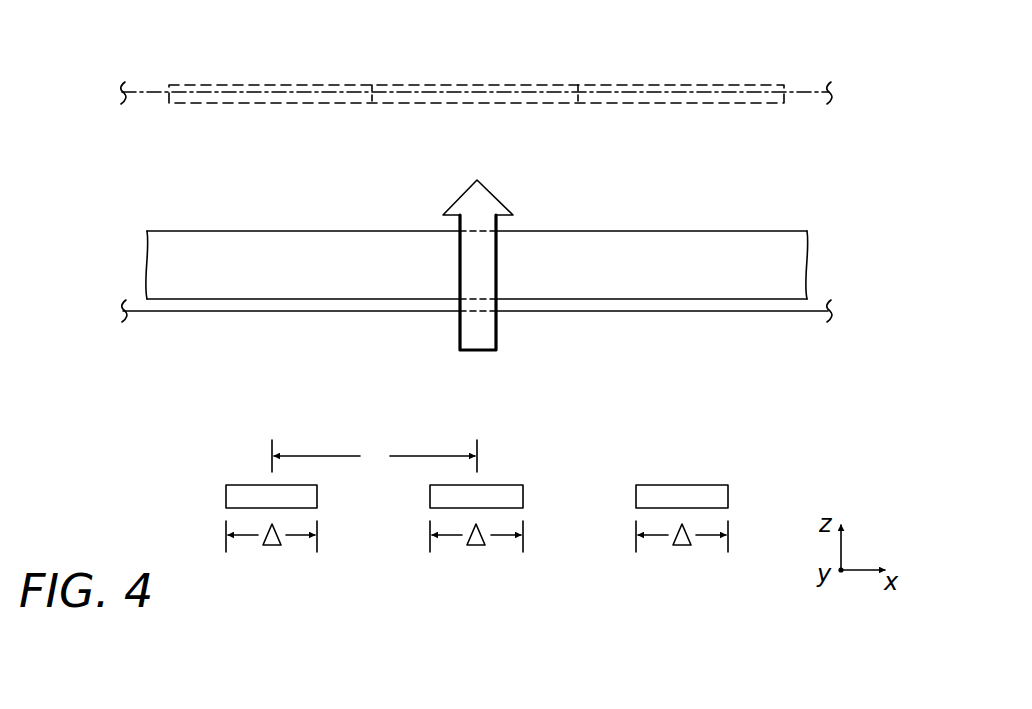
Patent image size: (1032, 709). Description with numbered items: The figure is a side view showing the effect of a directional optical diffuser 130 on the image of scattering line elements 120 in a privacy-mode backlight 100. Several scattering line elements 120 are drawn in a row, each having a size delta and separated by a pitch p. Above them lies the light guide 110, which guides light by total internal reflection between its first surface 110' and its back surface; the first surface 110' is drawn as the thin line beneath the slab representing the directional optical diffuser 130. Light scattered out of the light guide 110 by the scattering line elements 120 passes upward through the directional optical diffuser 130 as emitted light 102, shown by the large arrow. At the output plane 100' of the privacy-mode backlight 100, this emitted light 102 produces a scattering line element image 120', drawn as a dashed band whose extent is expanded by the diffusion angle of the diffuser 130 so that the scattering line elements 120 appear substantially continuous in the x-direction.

The privacy-mode backlight 100 is at (489, 356).
The output plane 100' is at (517, 85).
The emitted light 102 is at (461, 333).
The light guide 110 is at (182, 393).
The first surface 110' is at (524, 292).
The scattering line elements 120 is at (541, 469).
The scattering line element image 120' is at (516, 64).
The directional optical diffuser 130 is at (737, 215).